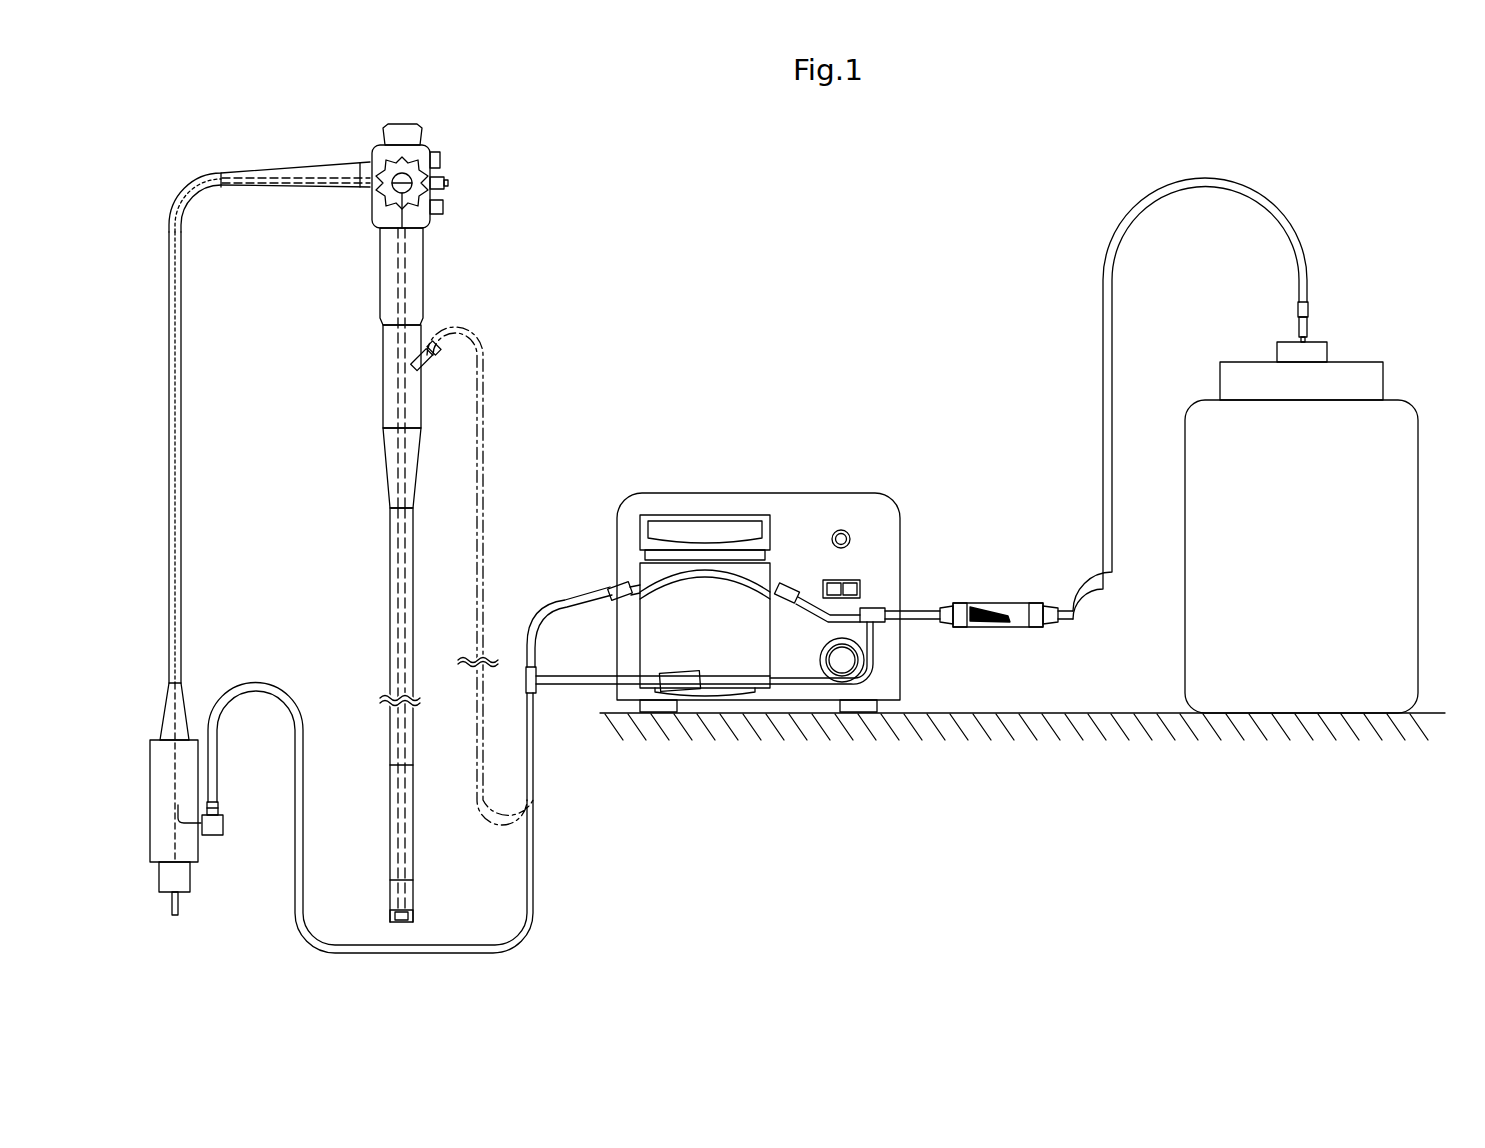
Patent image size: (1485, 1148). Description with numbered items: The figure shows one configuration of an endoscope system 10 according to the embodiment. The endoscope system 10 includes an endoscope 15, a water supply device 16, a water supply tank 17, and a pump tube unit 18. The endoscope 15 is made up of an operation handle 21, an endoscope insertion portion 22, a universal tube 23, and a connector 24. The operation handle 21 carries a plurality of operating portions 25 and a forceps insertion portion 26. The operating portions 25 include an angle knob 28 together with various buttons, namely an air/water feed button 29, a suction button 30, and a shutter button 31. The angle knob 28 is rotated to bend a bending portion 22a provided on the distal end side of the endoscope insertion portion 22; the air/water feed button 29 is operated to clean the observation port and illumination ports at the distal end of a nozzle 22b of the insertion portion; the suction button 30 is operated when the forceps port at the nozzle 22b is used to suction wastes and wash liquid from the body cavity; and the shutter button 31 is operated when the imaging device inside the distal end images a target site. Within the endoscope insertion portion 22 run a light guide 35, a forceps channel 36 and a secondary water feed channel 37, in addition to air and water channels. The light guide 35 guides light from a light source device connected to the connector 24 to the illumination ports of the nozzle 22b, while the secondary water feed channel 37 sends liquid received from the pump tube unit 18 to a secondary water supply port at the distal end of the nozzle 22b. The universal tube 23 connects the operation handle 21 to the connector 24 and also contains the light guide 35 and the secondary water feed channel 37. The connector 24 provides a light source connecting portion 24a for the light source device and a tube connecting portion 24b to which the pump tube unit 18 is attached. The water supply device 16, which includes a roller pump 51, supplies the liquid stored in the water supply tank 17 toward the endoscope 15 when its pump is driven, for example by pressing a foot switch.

The endoscope system 10 is at (1330, 93).
The endoscope 15 is at (190, 152).
The water supply device 16 is at (690, 465).
The water supply tank 17 is at (1418, 466).
The pump tube unit 18 is at (948, 548).
The operation handle 21 is at (385, 272).
The endoscope insertion portion 22 is at (378, 508).
The bending portion 22a is at (412, 876).
The nozzle 22b is at (412, 918).
The universal tube 23 is at (182, 322).
The connector 24 is at (158, 803).
The light source connecting portion 24a is at (162, 885).
The tube connecting portion 24b is at (218, 838).
The operating portions 25 is at (508, 113).
The forceps insertion portion 26 is at (425, 378).
The angle knob 28 is at (420, 165).
The air/water feed button 29 is at (448, 186).
The suction button 30 is at (446, 210).
The shutter button 31 is at (446, 160).
The light guide 35 is at (170, 502).
The forceps channel 36 is at (412, 557).
The secondary water feed channel 37 is at (390, 358).
The roller pump 51 is at (660, 648).